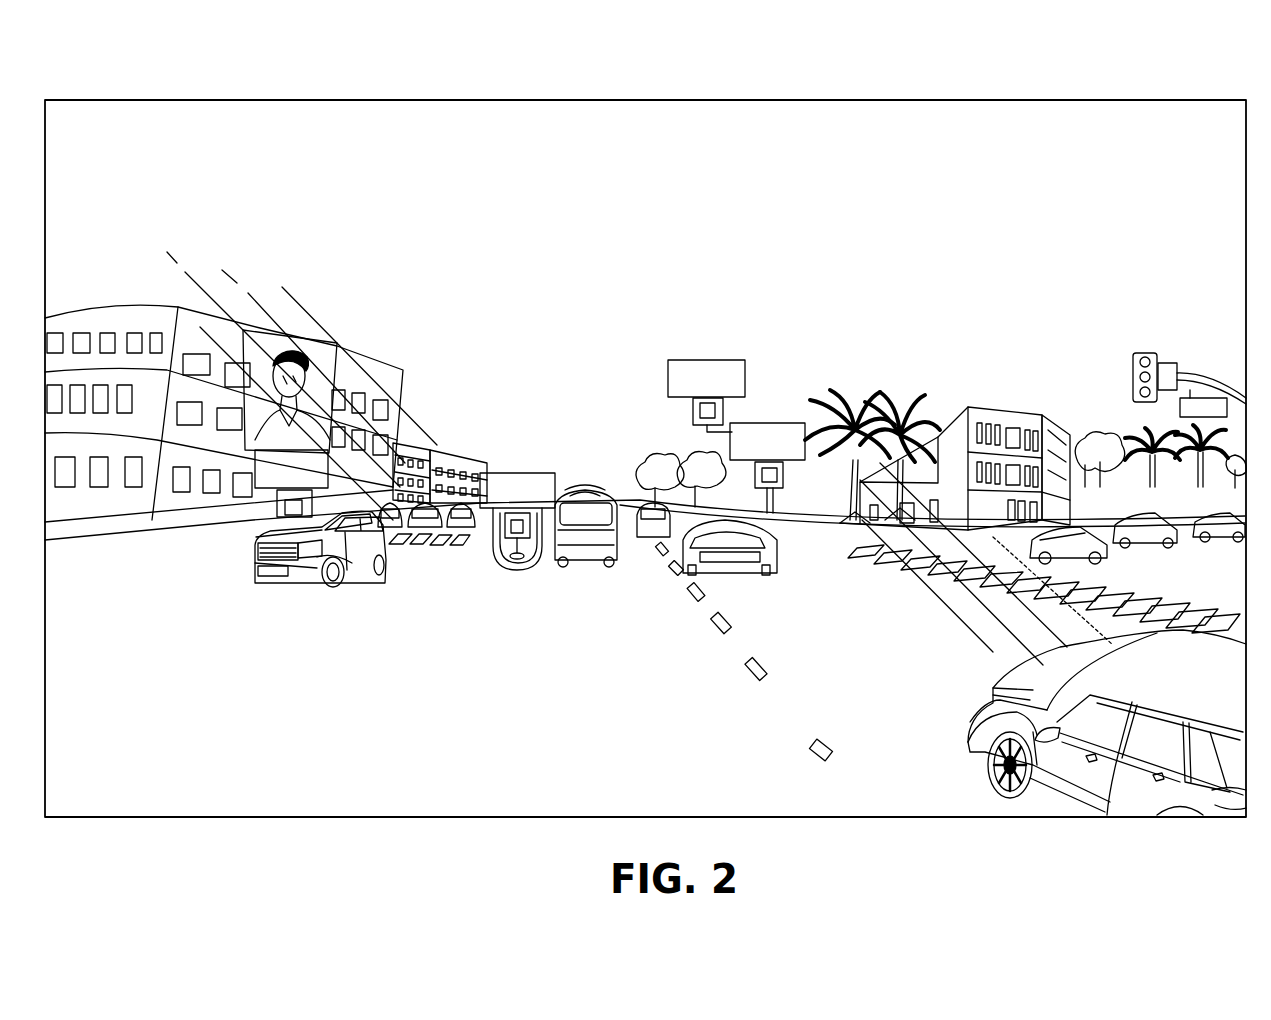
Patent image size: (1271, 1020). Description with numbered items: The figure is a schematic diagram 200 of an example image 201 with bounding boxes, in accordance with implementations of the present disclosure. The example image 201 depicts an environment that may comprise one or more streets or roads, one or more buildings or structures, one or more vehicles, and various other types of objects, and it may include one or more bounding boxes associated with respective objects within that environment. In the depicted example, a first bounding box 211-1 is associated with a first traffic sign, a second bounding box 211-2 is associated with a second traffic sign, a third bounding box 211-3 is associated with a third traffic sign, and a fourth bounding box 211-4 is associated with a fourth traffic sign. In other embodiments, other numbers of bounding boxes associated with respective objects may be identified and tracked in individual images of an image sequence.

The schematic diagram 200 is at (1177, 60).
The example image 201 is at (762, 100).
The bounding box 211-1 is at (270, 500).
The bounding box 211-2 is at (513, 568).
The bounding box 211-3 is at (688, 358).
The bounding box 211-4 is at (792, 478).